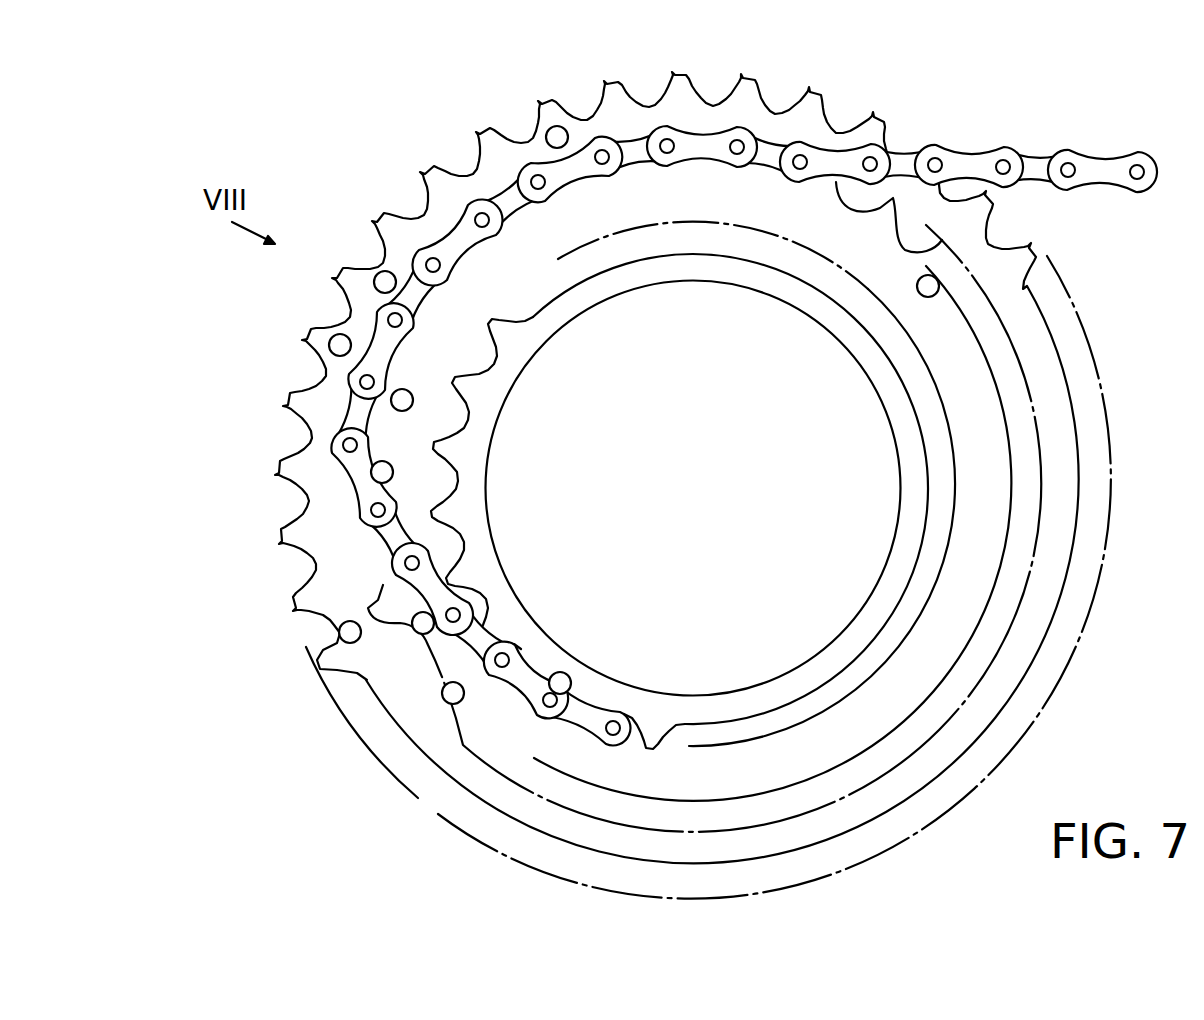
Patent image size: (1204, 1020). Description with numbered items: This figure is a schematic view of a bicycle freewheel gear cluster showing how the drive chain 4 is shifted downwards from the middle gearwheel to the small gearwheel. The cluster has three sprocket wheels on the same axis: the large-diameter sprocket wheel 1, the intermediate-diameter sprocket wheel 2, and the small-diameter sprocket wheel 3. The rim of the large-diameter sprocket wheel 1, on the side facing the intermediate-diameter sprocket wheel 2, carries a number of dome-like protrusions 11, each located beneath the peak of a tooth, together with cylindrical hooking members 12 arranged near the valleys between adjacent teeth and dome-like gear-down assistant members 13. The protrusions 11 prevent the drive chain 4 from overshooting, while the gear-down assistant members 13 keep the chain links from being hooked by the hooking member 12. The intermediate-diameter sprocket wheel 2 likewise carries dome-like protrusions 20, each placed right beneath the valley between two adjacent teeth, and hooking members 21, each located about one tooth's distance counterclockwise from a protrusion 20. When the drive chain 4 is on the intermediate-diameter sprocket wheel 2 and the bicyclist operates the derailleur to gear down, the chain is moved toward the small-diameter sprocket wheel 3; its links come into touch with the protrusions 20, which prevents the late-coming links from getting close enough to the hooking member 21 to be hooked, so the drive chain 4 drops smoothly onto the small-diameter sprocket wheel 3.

The large-diameter sprocket wheel 1 is at (689, 86).
The intermediate-diameter sprocket wheel 2 is at (550, 282).
The small-diameter sprocket wheel 3 is at (508, 360).
The drive chain 4 is at (971, 157).
The dome-like protrusions 11 is at (559, 127).
The hooking member 12 is at (379, 273).
The gear-down assistant member 13 is at (333, 339).
The dome-like protrusions 20 is at (393, 405).
The hooking member 21 is at (373, 476).